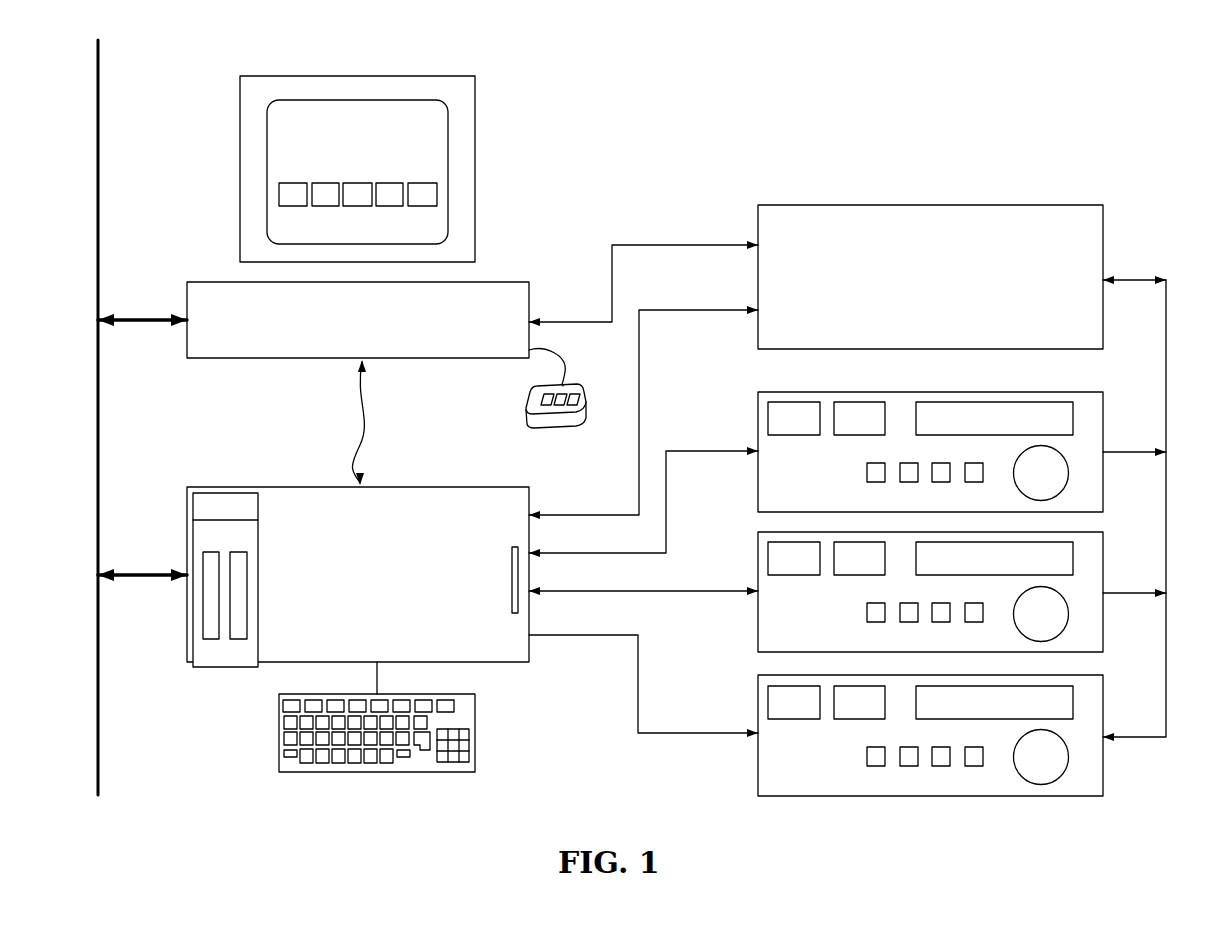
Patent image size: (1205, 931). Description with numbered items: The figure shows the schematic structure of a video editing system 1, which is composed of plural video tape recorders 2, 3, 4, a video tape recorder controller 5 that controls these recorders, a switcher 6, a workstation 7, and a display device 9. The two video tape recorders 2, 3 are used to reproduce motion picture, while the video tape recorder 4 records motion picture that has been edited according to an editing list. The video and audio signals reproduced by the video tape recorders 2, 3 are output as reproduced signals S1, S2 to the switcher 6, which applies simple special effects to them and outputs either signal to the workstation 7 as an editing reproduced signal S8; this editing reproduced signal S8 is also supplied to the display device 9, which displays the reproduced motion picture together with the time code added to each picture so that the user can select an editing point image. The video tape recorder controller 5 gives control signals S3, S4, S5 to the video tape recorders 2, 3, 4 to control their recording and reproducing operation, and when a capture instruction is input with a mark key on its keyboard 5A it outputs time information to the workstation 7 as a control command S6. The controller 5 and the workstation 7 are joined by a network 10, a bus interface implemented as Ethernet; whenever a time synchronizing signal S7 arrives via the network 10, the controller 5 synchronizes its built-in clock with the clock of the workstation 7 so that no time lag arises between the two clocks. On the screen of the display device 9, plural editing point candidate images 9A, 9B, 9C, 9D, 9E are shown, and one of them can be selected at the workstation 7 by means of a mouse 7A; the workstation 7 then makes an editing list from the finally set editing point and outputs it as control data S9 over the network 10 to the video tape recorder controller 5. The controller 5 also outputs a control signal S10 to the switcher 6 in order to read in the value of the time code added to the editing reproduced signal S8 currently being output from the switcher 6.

The video editing system 1 is at (1156, 107).
The video tape recorder 2 is at (758, 403).
The video tape recorder 3 is at (758, 543).
The video tape recorder 4 is at (758, 776).
The video tape recorder controller 5 is at (279, 487).
The keyboard 5A is at (279, 727).
The switcher 6 is at (968, 205).
The workstation 7 is at (322, 360).
The mouse 7A is at (527, 398).
The display device 9 is at (475, 103).
The editing point candidate image 9A is at (293, 182).
The editing point candidate image 9B is at (323, 182).
The editing point candidate image 9C is at (358, 182).
The editing point candidate image 9D is at (387, 182).
The editing point candidate image 9E is at (423, 182).
The network 10 is at (98, 173).
The reproduced signal S1 is at (1130, 451).
The reproduced signal S2 is at (1130, 591).
The control signal S3 is at (708, 455).
The control signal S4 is at (700, 595).
The control signal S5 is at (660, 735).
The control command S6 is at (365, 422).
The time synchronizing signal S7 is at (146, 573).
The editing reproduced signal S8 is at (583, 317).
The control data S9 is at (148, 316).
The control signal S10 is at (700, 312).